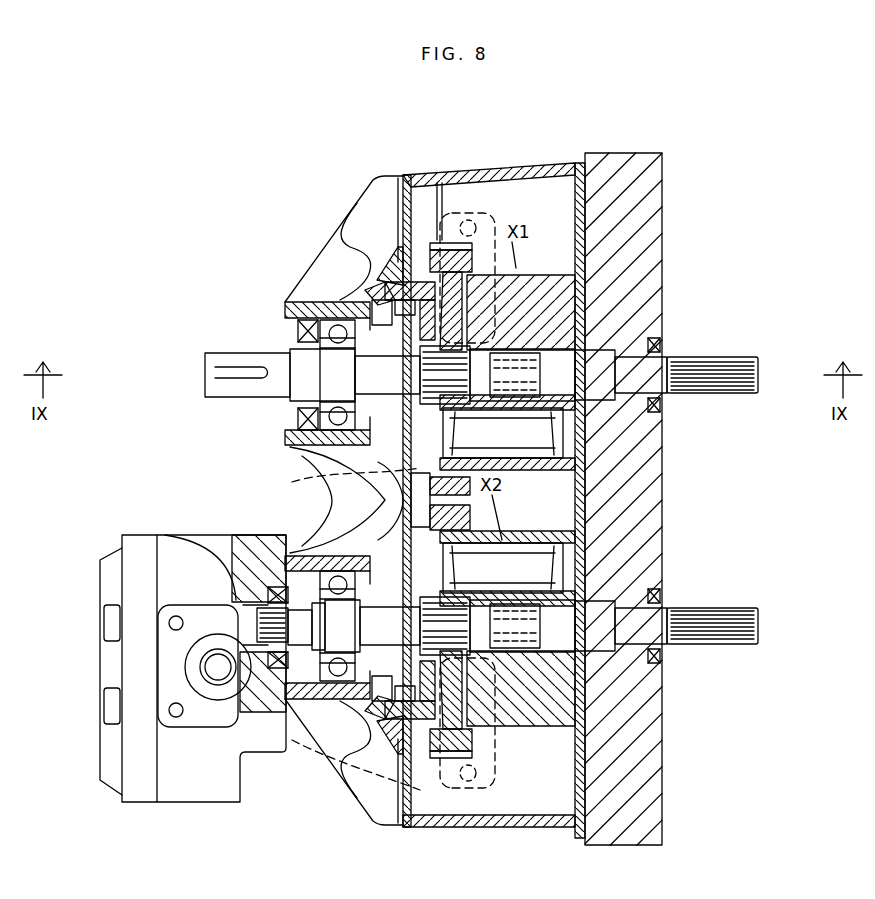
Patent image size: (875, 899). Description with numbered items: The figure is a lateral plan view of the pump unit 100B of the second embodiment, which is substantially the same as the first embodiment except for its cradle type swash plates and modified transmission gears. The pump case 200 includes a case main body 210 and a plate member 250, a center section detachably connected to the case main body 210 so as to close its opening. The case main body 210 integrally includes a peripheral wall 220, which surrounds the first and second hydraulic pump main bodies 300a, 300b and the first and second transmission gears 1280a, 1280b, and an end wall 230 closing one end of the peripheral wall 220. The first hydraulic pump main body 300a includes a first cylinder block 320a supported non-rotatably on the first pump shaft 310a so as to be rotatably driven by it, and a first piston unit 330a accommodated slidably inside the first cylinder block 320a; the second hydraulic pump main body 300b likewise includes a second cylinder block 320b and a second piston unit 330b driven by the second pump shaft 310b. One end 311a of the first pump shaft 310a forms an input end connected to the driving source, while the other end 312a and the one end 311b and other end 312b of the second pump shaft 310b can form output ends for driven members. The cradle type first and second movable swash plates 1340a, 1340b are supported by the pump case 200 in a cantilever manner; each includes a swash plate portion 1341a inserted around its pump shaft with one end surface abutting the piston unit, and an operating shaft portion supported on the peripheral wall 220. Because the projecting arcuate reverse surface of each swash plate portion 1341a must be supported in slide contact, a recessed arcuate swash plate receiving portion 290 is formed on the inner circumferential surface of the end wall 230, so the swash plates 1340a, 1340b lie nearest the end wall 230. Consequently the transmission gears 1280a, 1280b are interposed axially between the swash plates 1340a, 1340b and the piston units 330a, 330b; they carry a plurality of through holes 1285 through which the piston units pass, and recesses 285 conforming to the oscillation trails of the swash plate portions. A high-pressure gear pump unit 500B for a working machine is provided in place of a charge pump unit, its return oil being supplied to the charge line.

The pump unit 100B is at (745, 219).
The pump case 200 is at (672, 110).
The case main body 210 is at (587, 160).
The peripheral wall 220 is at (528, 180).
The end wall 230 is at (395, 212).
The plate member 250 is at (612, 153).
The recess 285 is at (412, 195).
The swash plate receiving portion 290 is at (372, 458).
The through hole 1285 is at (300, 483).
The first hydraulic pump main body 300a is at (550, 237).
The second hydraulic pump main body 300b is at (548, 736).
The first pump shaft 310a is at (630, 370).
The second pump shaft 310b is at (630, 625).
The one end of the first pump shaft 311a is at (226, 372).
The one end of the second pump shaft 311b is at (250, 608).
The other end of the first pump shaft 312a is at (718, 378).
The other end of the second pump shaft 312b is at (718, 630).
The first cylinder block 320a is at (560, 300).
The second cylinder block 320b is at (545, 548).
The first piston unit 330a is at (535, 430).
The second piston unit 330b is at (530, 695).
The first transmission gear 1280a is at (452, 255).
The second transmission gear 1280b is at (452, 745).
The first movable swash plate 1340a is at (378, 285).
The second movable swash plate 1340b is at (378, 718).
The swash plate portion 1341a is at (372, 303).
The high-pressure gear pump unit 500B is at (118, 808).